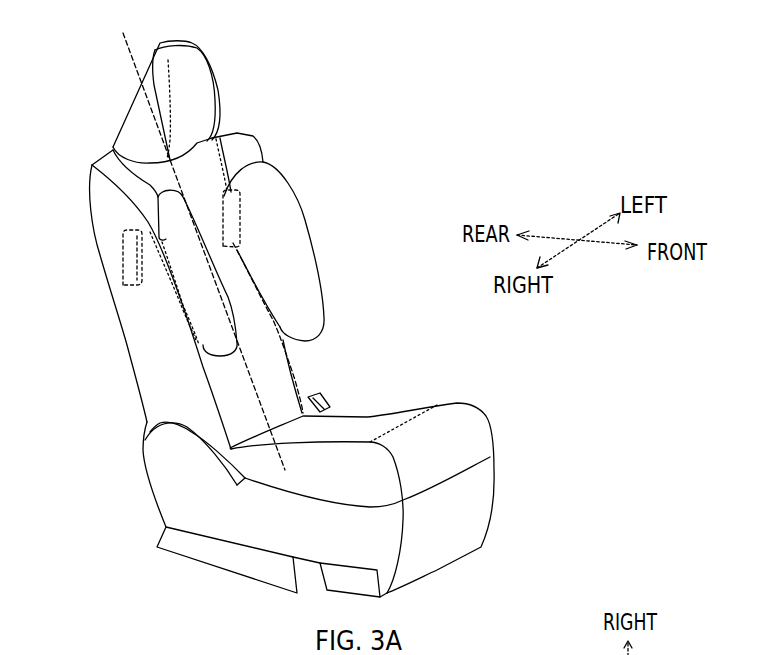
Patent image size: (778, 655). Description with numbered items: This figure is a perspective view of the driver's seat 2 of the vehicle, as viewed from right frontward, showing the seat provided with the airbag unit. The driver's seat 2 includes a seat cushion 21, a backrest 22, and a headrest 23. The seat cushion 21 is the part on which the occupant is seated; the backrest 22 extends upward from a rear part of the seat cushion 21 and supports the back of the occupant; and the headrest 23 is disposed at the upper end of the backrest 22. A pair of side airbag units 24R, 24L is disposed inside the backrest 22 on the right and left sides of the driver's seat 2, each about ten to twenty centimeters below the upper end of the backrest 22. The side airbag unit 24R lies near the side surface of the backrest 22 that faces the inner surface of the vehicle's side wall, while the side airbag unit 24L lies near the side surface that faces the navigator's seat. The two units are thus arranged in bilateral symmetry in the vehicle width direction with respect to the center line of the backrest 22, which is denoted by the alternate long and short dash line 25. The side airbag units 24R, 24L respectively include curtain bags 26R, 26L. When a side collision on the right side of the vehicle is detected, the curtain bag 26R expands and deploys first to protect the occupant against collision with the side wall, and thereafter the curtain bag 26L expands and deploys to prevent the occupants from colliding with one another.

The driver's seat 2 is at (303, 105).
The seat cushion 21 is at (463, 427).
The backrest 22 is at (150, 372).
The headrest 23 is at (196, 72).
The side airbag unit 24L is at (241, 188).
The side airbag unit 24R is at (125, 240).
The alternate long and short dash line 25 is at (118, 55).
The curtain bag 26L is at (306, 212).
The curtain bag 26R is at (160, 197).